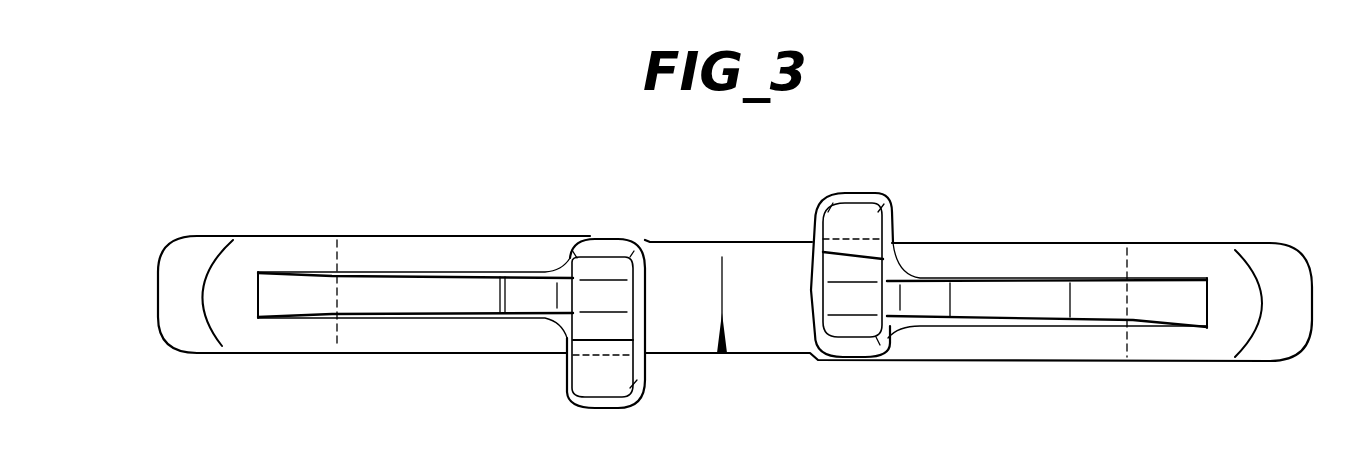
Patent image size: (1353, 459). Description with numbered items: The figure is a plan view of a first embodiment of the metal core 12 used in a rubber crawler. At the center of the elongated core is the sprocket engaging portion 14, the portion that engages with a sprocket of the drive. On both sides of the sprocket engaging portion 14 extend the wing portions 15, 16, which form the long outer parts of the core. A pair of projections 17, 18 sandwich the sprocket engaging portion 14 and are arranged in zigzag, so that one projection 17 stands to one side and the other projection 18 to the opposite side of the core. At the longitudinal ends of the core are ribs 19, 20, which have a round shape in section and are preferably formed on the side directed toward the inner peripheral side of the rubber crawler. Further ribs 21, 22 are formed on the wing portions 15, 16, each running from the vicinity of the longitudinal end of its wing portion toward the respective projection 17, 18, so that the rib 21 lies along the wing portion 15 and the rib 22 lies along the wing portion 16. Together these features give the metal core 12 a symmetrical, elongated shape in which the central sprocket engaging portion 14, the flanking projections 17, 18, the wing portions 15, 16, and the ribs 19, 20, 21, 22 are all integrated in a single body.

The metal core 12 is at (993, 240).
The sprocket engaging portion 14 is at (745, 257).
The wing portion 15 is at (1072, 252).
The wing portion 16 is at (437, 248).
The projection 17 is at (853, 213).
The projection 18 is at (617, 368).
The rib 19 is at (1280, 263).
The rib 20 is at (192, 255).
The rib 21 is at (997, 303).
The rib 22 is at (430, 293).